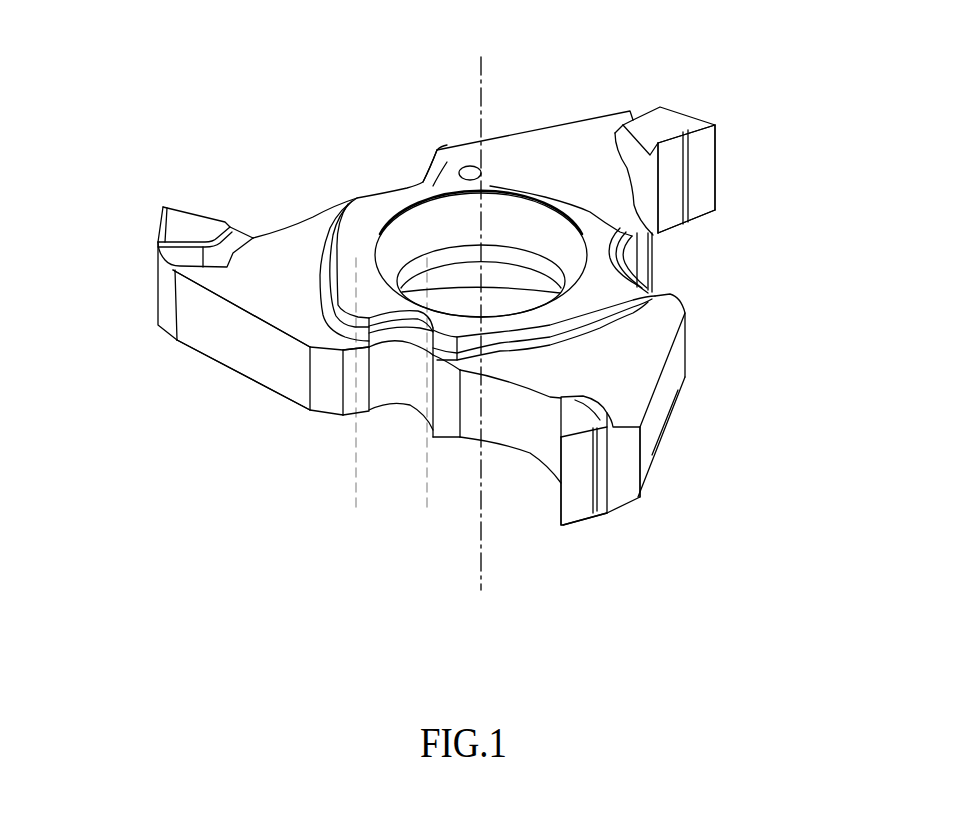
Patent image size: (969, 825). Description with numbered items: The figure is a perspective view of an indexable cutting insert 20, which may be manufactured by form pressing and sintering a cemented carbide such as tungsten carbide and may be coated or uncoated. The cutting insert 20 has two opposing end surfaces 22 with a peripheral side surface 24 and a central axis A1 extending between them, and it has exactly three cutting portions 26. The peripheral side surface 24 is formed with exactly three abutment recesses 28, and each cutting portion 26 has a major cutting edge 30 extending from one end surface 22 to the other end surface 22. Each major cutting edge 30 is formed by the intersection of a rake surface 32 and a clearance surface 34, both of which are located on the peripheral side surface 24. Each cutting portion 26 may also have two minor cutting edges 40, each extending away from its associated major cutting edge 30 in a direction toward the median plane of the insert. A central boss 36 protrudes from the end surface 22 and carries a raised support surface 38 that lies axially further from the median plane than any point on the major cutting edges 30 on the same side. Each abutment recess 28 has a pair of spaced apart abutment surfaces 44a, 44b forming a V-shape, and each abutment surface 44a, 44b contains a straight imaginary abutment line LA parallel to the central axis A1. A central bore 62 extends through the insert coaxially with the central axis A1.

The cutting insert 20 is at (514, 92).
The end surface 22 is at (268, 250).
The peripheral side surface 24 is at (219, 350).
The cutting portion 26 is at (184, 215).
The abutment recess 28 is at (397, 164).
The major cutting edge 30 is at (715, 180).
The rake surface 32 is at (700, 160).
The clearance surface 34 is at (577, 487).
The central boss 36 is at (585, 320).
The raised support surface 38 is at (640, 287).
The minor cutting edge 40 is at (688, 143).
The abutment surface 44a is at (350, 390).
The abutment surface 44b is at (427, 390).
The central bore 62 is at (506, 226).
The central axis A1 is at (476, 325).
The imaginary abutment line LA is at (393, 401).